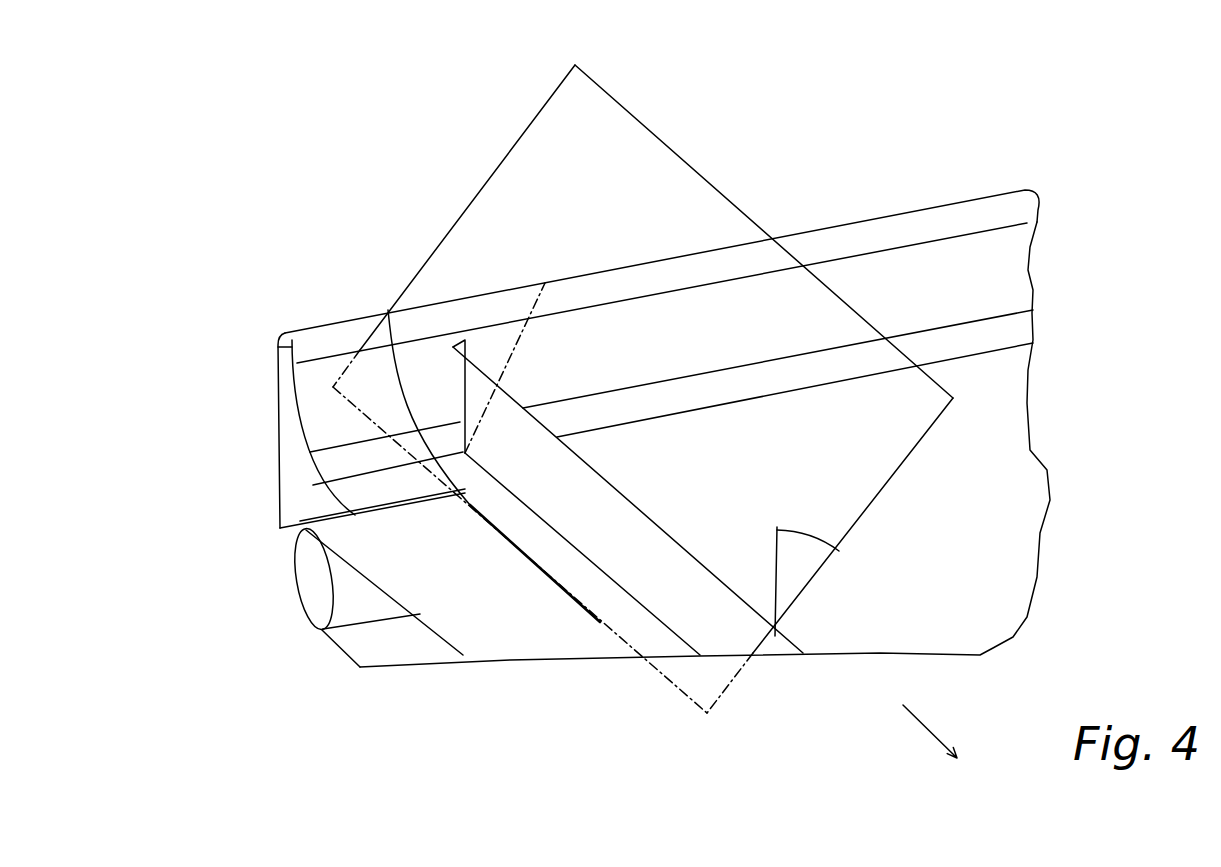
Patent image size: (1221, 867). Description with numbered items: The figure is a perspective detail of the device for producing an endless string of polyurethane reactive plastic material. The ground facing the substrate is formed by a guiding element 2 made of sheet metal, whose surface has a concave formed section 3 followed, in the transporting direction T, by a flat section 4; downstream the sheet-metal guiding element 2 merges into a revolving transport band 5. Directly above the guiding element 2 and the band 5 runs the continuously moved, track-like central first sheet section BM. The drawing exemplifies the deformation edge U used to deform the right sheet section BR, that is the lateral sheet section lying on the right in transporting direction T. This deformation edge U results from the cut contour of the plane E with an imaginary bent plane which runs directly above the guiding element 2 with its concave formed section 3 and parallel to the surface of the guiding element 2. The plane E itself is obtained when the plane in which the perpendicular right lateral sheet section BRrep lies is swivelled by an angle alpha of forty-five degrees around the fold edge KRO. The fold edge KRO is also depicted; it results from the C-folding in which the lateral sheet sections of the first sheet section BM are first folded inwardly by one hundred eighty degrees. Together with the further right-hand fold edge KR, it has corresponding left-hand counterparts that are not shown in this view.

The guiding element 2 is at (310, 352).
The concave formed section 3 is at (353, 445).
The flat section 4 is at (383, 482).
The revolving transport band 5 is at (420, 580).
The plane E is at (590, 156).
The deformation edge U is at (484, 392).
The fold edge KRO is at (530, 565).
The right sheet section BR is at (582, 510).
The fold edge KR is at (677, 637).
The right lateral sheet section BRrep is at (707, 605).
The angle alpha is at (807, 581).
The central first sheet section BM is at (990, 546).
The transporting direction T is at (934, 724).